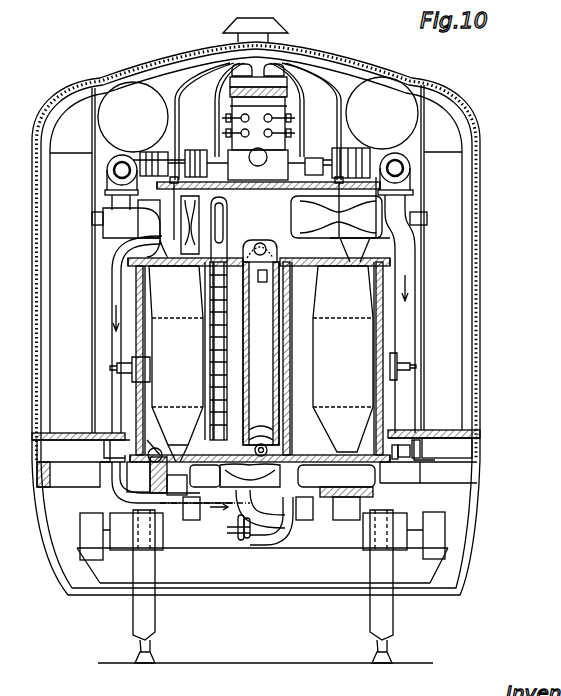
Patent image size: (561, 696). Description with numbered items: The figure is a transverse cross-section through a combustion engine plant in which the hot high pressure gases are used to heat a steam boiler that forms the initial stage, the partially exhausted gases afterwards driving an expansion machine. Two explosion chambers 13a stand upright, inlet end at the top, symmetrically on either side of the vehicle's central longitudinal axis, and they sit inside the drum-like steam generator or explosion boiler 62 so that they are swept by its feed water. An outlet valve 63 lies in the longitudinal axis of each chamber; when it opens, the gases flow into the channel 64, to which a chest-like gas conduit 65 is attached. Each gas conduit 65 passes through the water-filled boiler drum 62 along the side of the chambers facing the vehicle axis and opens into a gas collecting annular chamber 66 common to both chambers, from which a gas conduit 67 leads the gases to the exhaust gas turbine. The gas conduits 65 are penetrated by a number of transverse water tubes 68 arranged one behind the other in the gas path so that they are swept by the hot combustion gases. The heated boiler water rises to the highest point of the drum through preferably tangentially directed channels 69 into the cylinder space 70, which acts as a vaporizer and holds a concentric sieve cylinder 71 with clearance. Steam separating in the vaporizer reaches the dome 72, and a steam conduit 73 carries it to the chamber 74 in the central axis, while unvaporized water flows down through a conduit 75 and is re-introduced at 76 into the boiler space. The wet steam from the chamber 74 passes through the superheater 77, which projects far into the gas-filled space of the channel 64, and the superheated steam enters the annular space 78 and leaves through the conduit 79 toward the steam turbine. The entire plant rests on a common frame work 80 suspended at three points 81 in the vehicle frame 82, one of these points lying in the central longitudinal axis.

The explosion chamber 13a is at (261, 359).
The steam generator (explosion boiler) 62 is at (148, 282).
The outlet valve 63 is at (180, 448).
The channel 64 is at (156, 476).
The gas conduit 65 is at (218, 357).
The gas collecting annular chamber 66 is at (218, 221).
The gas conduit 67 is at (405, 270).
The transverse water tube 68 is at (223, 377).
The channel 69 is at (275, 283).
The cylinder space 70 is at (290, 372).
The sieve cylinder 71 is at (277, 406).
The dome 72 is at (270, 250).
The steam conduit 73 is at (117, 341).
The chamber 74 is at (259, 470).
The conduit 75 is at (278, 423).
The re-introduction point 76 is at (155, 448).
The superheater 77 is at (215, 533).
The annular space 78 is at (287, 473).
The conduit 79 is at (283, 525).
The frame work 80 is at (398, 458).
The suspension point 81 is at (110, 457).
The vehicle frame 82 is at (425, 455).